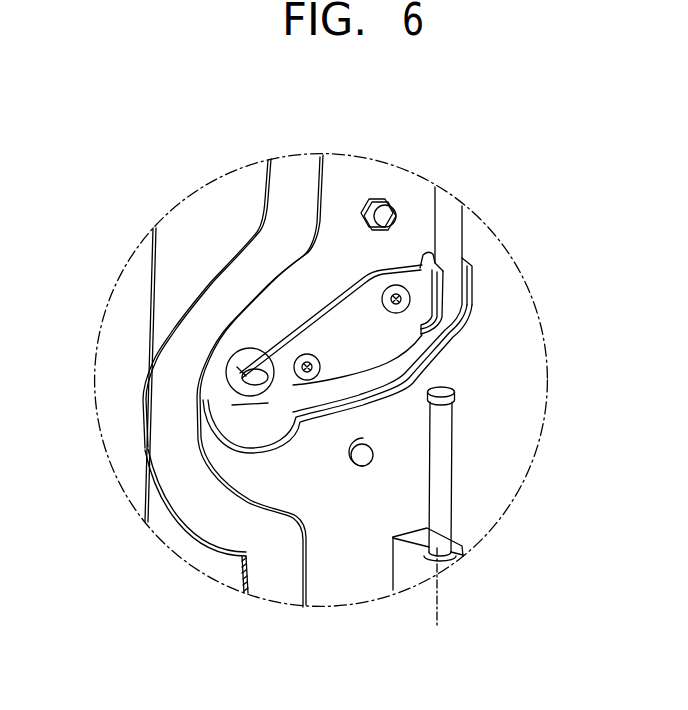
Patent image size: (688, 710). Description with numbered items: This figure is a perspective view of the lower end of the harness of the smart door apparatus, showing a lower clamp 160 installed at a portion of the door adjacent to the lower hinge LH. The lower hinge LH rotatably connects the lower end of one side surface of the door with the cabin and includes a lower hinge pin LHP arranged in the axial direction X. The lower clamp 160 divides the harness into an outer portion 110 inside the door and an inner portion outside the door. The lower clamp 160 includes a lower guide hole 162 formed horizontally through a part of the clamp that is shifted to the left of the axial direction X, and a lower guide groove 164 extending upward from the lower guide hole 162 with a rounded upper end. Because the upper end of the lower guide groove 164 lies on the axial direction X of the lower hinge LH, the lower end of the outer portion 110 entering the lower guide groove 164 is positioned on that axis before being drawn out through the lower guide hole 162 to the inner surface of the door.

The outer portion 110 is at (452, 228).
The lower clamp 160 is at (418, 305).
The lower guide hole 162 is at (237, 417).
The lower guide groove 164 is at (440, 358).
The lower hinge pin LHP is at (443, 474).
The lower hinge LH is at (395, 583).
The axial direction X is at (436, 602).